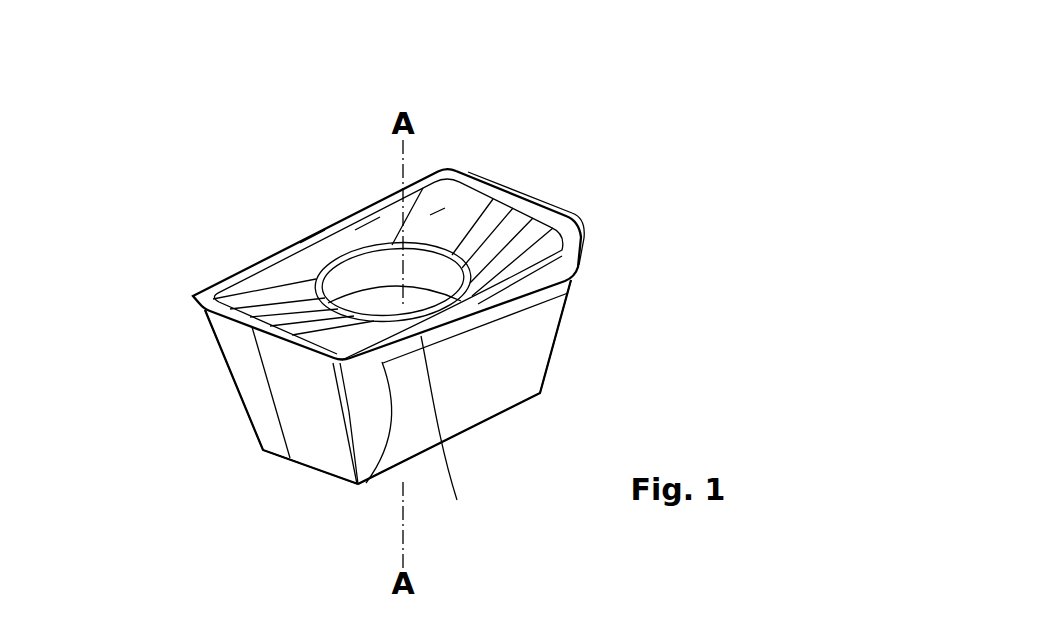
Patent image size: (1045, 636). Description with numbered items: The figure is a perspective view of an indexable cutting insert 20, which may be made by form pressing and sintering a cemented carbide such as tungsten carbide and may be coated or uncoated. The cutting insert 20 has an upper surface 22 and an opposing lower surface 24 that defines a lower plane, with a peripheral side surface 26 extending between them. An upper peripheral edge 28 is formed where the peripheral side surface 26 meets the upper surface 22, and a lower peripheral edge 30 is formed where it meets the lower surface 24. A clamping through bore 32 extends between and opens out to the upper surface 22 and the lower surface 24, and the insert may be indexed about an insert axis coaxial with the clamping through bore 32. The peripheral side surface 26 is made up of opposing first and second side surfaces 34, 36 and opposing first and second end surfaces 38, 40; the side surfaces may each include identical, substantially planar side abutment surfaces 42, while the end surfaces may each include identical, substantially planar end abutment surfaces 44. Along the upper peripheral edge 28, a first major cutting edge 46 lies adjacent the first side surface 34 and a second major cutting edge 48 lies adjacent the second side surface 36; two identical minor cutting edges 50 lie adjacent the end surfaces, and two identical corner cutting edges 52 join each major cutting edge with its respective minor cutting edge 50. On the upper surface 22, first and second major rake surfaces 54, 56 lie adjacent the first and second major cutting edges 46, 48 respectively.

The indexable cutting insert 20 is at (213, 178).
The upper surface 22 is at (480, 211).
The lower surface 24 is at (469, 442).
The peripheral side surface 26 is at (527, 352).
The upper peripheral edge 28 is at (230, 268).
The lower peripheral edge 30 is at (416, 476).
The clamping through bore 32 is at (359, 272).
The first side surface 34 is at (495, 377).
The second side surface 36 is at (216, 357).
The first end surface 38 is at (270, 431).
The second end surface 40 is at (577, 297).
The side abutment surface 42 is at (455, 395).
The end abutment surface 44 is at (575, 232).
The first major cutting edge 46 is at (374, 482).
The second major cutting edge 48 is at (312, 226).
The minor cutting edge 50 is at (437, 220).
The corner cutting edge 52 is at (444, 168).
The first major rake surface 54 is at (457, 500).
The second major rake surface 56 is at (368, 224).